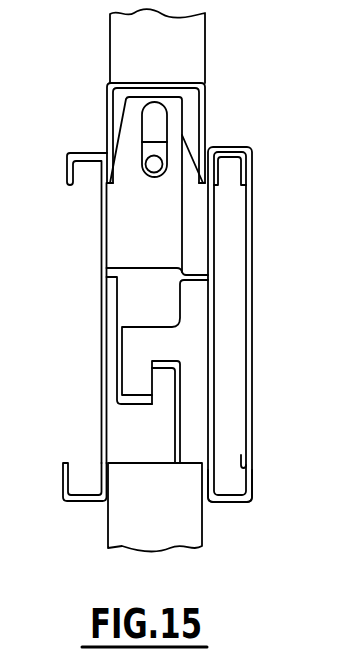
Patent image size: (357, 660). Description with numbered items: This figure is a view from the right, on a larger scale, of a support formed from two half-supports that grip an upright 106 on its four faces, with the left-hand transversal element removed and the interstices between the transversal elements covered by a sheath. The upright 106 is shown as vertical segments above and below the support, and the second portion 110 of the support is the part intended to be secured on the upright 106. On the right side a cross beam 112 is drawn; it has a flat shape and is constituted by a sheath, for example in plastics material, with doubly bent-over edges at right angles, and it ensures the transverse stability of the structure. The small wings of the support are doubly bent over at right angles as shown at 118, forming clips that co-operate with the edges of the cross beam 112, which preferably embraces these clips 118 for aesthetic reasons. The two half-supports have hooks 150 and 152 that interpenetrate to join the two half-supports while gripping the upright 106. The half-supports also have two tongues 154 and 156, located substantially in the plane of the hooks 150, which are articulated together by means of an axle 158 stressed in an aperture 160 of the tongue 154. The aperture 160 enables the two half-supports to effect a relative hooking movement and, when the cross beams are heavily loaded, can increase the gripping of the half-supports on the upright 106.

The upright 106 is at (197, 57).
The second portion 110 is at (138, 465).
The cross beam 112 is at (252, 315).
The doubly bent-over small wing 118 is at (63, 479).
The hook 150 is at (132, 380).
The hook 152 is at (162, 385).
The tongue 154 is at (122, 234).
The tongue 156 is at (201, 240).
The axle 158 is at (154, 173).
The aperture 160 is at (168, 122).